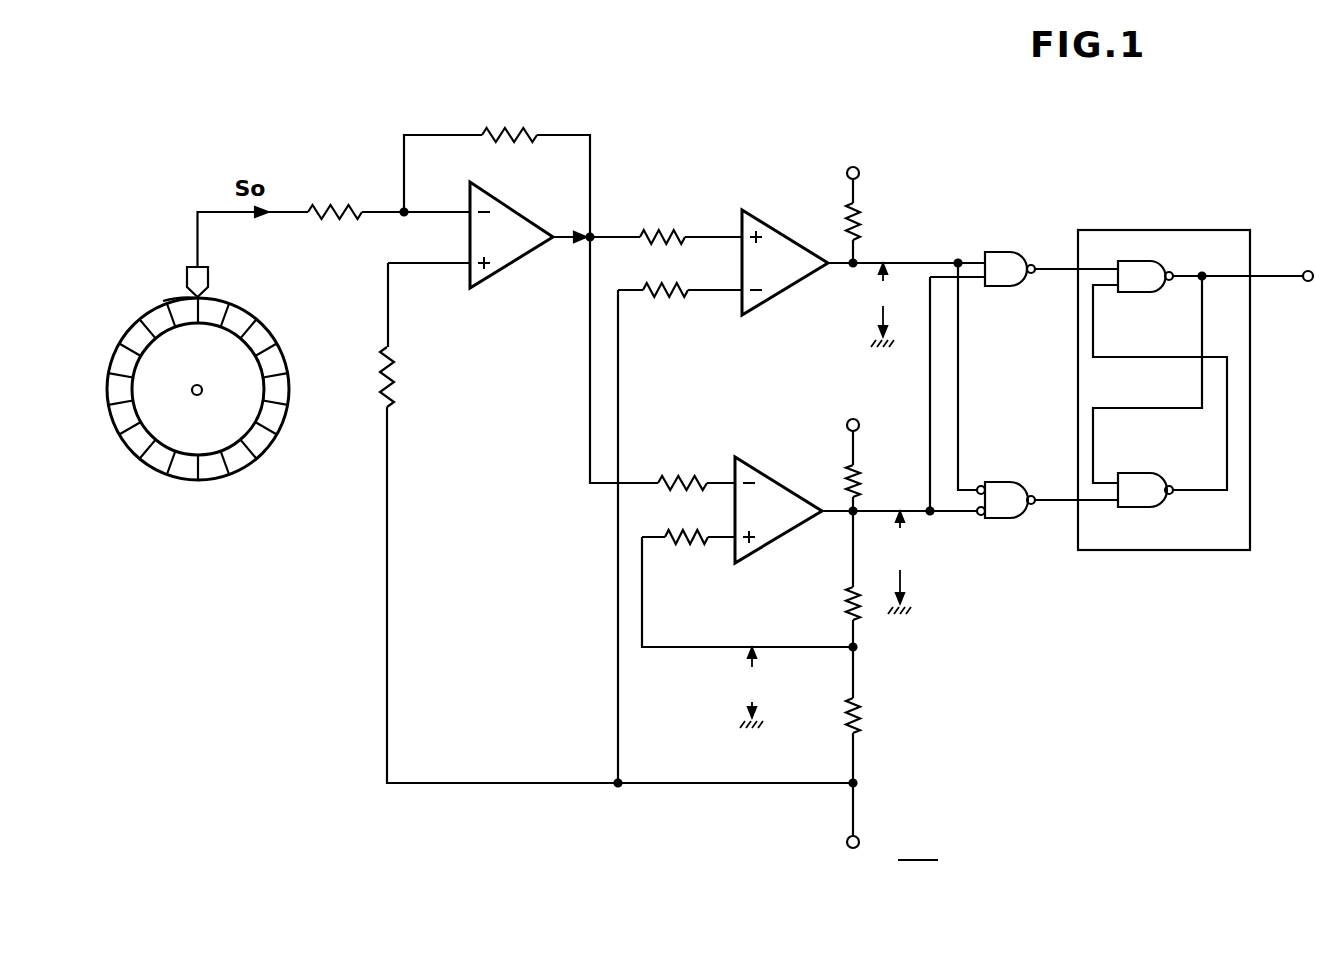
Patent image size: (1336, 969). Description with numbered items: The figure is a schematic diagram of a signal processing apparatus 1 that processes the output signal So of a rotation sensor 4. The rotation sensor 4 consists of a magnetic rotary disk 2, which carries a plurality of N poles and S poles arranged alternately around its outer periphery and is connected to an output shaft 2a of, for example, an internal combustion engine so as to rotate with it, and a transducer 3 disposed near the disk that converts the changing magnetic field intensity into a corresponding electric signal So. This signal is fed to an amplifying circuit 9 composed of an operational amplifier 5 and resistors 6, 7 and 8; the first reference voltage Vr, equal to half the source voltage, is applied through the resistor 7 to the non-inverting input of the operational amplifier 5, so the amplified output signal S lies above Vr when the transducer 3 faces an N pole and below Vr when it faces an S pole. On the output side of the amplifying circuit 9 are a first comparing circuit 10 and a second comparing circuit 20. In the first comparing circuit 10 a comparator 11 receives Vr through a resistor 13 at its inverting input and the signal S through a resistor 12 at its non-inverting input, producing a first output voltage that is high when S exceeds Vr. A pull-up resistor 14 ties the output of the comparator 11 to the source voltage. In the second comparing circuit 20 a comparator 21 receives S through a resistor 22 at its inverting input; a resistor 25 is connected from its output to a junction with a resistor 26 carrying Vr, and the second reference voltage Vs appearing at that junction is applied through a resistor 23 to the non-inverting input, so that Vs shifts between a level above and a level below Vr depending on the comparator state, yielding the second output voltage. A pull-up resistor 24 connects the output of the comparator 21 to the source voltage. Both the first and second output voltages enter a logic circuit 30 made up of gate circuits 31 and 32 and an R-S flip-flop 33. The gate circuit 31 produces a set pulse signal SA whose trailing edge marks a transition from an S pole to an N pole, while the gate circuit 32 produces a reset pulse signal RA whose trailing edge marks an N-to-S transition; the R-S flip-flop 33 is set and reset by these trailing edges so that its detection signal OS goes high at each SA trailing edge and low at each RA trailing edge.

The signal processing apparatus 1 is at (812, 473).
The magnetic rotary disk 2 is at (150, 324).
The output shaft 2a is at (198, 396).
The transducer 3 is at (208, 273).
The rotation sensor 4 is at (156, 294).
The operational amplifier 5 is at (507, 254).
The resistor 6 is at (334, 204).
The resistor 7 is at (393, 366).
The resistor 8 is at (510, 130).
The amplifying circuit 9 is at (531, 272).
The first comparing circuit 10 is at (801, 459).
The comparator 11 is at (770, 238).
The resistor 12 is at (660, 226).
The resistor 13 is at (663, 297).
The pull-up resistor 14 is at (861, 224).
The second comparing circuit 20 is at (747, 638).
The comparator 21 is at (767, 488).
The resistor 22 is at (680, 474).
The resistor 23 is at (682, 544).
The pull-up resistor 24 is at (861, 478).
The resistor 25 is at (846, 603).
The resistor 26 is at (861, 714).
The logic circuit 30 is at (1123, 355).
The gate circuit 31 is at (1005, 256).
The gate circuit 32 is at (1003, 528).
The R-S flip-flop 33 is at (1163, 230).